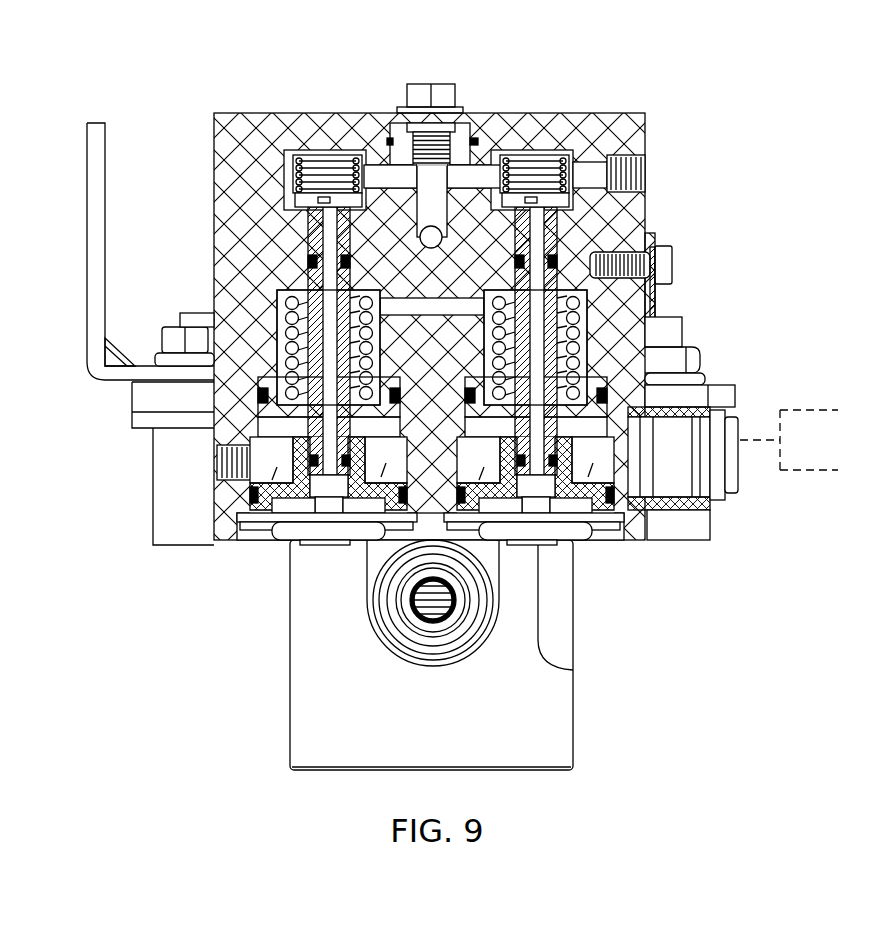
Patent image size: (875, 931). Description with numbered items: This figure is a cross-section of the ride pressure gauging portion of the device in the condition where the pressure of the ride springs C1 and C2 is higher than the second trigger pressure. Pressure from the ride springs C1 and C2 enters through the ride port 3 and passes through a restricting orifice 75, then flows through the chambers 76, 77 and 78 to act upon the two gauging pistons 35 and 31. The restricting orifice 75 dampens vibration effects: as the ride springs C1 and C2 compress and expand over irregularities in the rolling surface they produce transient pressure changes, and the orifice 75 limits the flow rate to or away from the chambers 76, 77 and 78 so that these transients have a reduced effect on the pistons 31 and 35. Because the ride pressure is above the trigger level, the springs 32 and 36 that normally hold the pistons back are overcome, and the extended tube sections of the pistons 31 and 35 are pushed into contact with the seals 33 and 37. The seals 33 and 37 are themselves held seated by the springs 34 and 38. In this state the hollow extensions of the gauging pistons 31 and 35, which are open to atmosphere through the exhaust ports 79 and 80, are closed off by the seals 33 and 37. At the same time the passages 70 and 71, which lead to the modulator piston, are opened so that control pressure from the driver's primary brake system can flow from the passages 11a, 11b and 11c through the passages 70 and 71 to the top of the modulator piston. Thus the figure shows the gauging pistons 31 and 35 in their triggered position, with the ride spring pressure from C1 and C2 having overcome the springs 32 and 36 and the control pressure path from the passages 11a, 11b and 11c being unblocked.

The ride port 3 is at (735, 484).
The passage 11a is at (477, 168).
The passage 11b is at (393, 175).
The passage 11c is at (437, 198).
The gauging piston 31 is at (227, 415).
The spring 32 is at (283, 323).
The seal 33 is at (300, 196).
The spring 34 is at (297, 157).
The gauging piston 35 is at (615, 365).
The spring 36 is at (575, 322).
The seal 37 is at (573, 163).
The spring 38 is at (598, 157).
The passage 70 is at (300, 213).
The passage 71 is at (563, 208).
The restricting orifice 75 is at (617, 462).
The chamber 76 is at (593, 457).
The chamber 77 is at (383, 520).
The chamber 78 is at (342, 498).
The exhaust port 79 is at (293, 540).
The exhaust port 80 is at (580, 668).
The ride spring C1 is at (804, 433).
The ride spring C2 is at (824, 474).